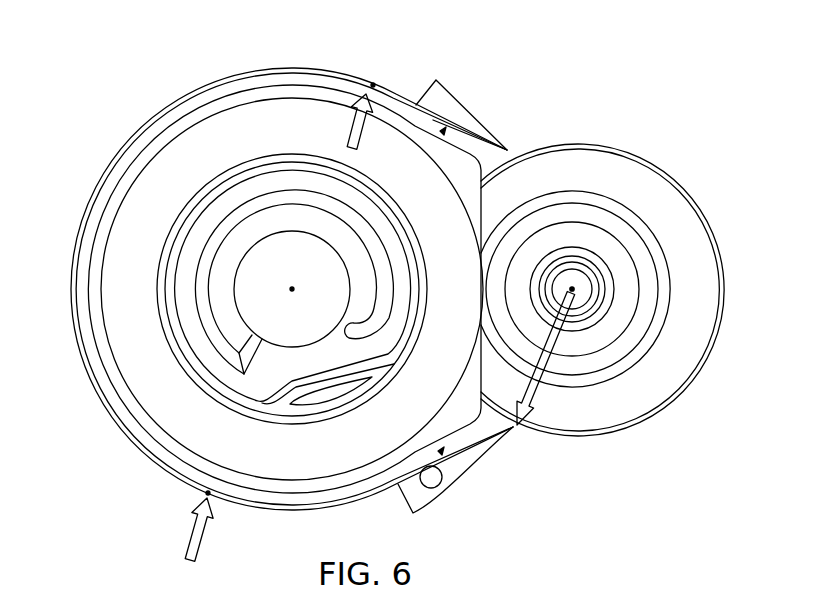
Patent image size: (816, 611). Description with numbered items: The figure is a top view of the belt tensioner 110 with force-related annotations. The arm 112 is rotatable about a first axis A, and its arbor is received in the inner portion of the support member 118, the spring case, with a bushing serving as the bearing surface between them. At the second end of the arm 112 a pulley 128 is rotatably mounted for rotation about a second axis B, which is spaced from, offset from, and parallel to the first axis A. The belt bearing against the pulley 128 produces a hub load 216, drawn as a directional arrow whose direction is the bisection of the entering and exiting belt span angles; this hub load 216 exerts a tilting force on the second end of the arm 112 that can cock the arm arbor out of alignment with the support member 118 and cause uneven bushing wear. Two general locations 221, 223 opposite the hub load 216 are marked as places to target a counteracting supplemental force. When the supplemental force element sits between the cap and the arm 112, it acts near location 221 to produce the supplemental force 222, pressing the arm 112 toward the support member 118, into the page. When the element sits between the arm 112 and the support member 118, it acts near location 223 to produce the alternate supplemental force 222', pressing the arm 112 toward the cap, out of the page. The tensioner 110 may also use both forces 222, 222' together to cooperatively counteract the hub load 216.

The belt tensioner 110 is at (592, 113).
The arm 112 is at (113, 282).
The support member 118 is at (103, 197).
The pulley 128 is at (697, 232).
The hub load 216 is at (535, 404).
The location 221 is at (374, 84).
The supplemental force 222 is at (328, 121).
The alternate supplemental force 222' is at (164, 529).
The location 223 is at (208, 493).
The first axis A is at (292, 289).
The second axis B is at (572, 289).